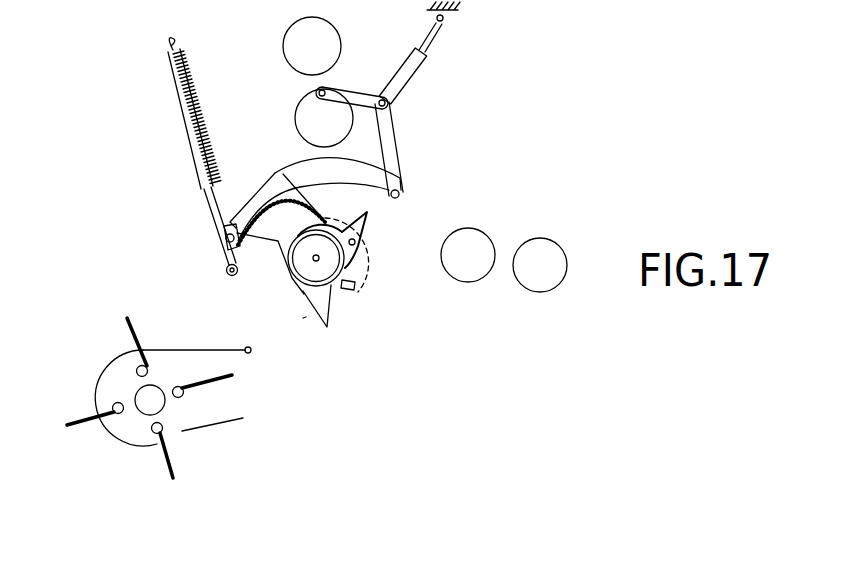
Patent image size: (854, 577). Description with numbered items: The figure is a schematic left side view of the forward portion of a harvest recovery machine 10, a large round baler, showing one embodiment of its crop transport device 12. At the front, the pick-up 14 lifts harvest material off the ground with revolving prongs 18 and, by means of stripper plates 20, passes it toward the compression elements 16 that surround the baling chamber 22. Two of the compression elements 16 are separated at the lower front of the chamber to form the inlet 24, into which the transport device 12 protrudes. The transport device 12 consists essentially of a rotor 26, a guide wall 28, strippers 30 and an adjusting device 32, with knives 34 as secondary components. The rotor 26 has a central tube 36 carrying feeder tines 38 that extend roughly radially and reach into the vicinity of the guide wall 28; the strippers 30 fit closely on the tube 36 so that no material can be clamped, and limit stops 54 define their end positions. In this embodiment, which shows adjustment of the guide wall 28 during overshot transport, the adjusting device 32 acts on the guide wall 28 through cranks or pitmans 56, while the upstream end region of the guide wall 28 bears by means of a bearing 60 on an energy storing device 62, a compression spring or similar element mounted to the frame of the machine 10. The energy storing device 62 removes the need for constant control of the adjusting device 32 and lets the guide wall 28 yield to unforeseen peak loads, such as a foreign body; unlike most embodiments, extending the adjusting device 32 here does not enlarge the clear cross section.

The harvest recovery machine 10 is at (128, 288).
The crop transport device 12 is at (204, 298).
The pick-up 14 is at (205, 444).
The compression elements 16 is at (532, 243).
The revolving teeth or prongs 18 is at (88, 407).
The stripper plates 20 is at (203, 350).
The baling chamber 22 is at (558, 98).
The inlet 24 is at (412, 266).
The rotor 26 is at (291, 316).
The guide wall 28 is at (386, 148).
The strippers 30 is at (380, 208).
The adjusting device 32 is at (410, 80).
The knives 34 is at (294, 172).
The tube 36 is at (288, 277).
The feeder tines 38 is at (328, 316).
The limit stops 54 is at (350, 287).
The cranks or pitmans 56 is at (360, 95).
The bearing 60 is at (231, 267).
The energy storing device 62 is at (182, 120).